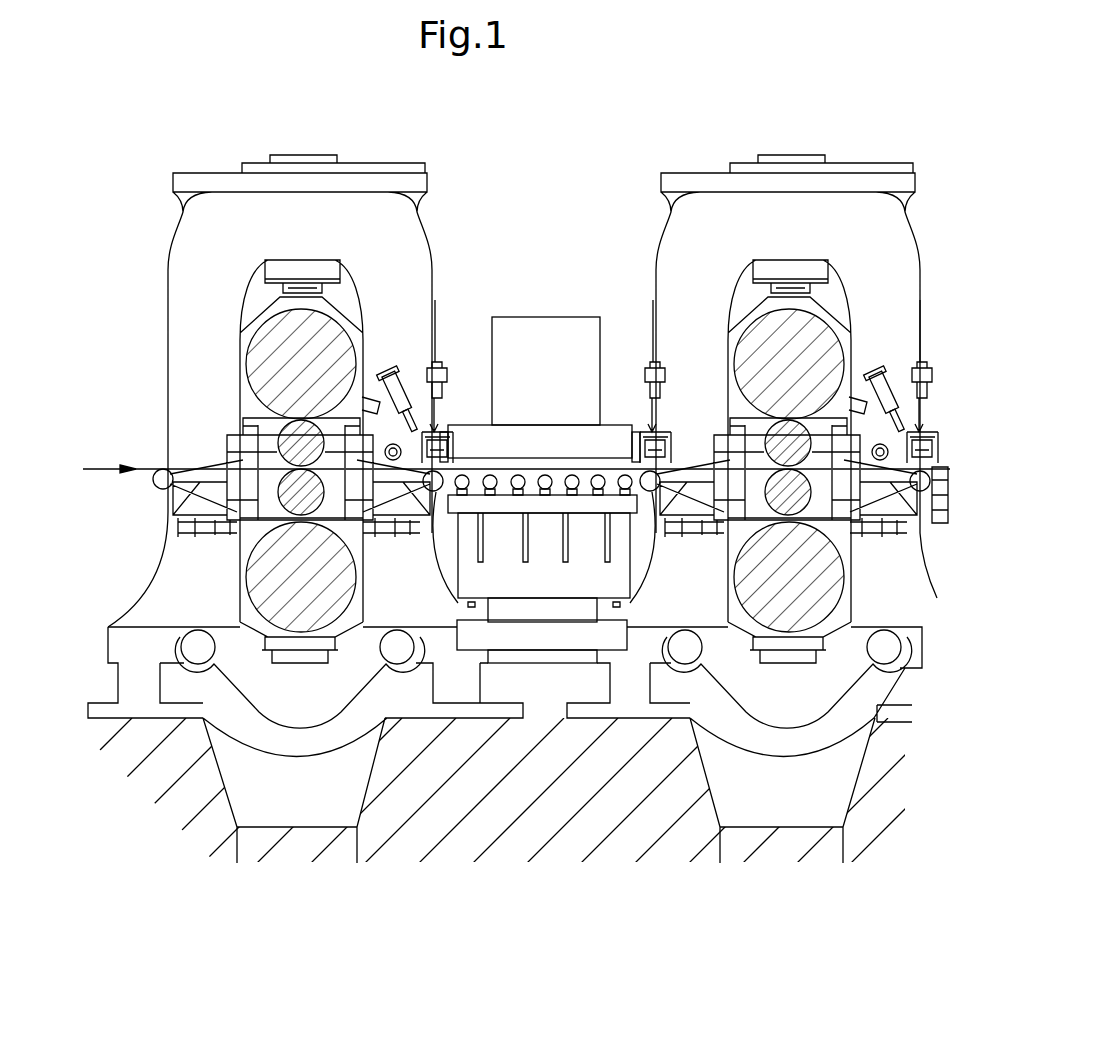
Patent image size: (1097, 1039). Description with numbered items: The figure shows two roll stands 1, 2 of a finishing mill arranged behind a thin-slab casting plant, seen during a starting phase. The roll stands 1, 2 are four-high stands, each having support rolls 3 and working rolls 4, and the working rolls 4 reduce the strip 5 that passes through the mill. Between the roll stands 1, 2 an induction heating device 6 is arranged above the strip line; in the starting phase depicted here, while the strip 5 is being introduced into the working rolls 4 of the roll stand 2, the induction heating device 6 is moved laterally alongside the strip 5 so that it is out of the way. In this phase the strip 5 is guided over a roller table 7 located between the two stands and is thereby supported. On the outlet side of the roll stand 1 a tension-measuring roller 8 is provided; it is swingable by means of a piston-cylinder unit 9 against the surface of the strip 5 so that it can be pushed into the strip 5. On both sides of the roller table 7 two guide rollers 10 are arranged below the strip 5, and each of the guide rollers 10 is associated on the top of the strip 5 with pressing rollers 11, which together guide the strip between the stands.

The roll stand 1 is at (405, 250).
The roll stand 2 is at (893, 262).
The support rolls 3 is at (265, 345).
The working rolls 4 is at (248, 418).
The strip 5 is at (120, 468).
The induction heating device 6 is at (549, 300).
The roller table 7 is at (553, 497).
The tension-measuring roller 8 is at (392, 373).
The piston-cylinder unit 9 is at (398, 408).
The guide rollers 10 is at (428, 494).
The pressing rollers 11 is at (442, 432).